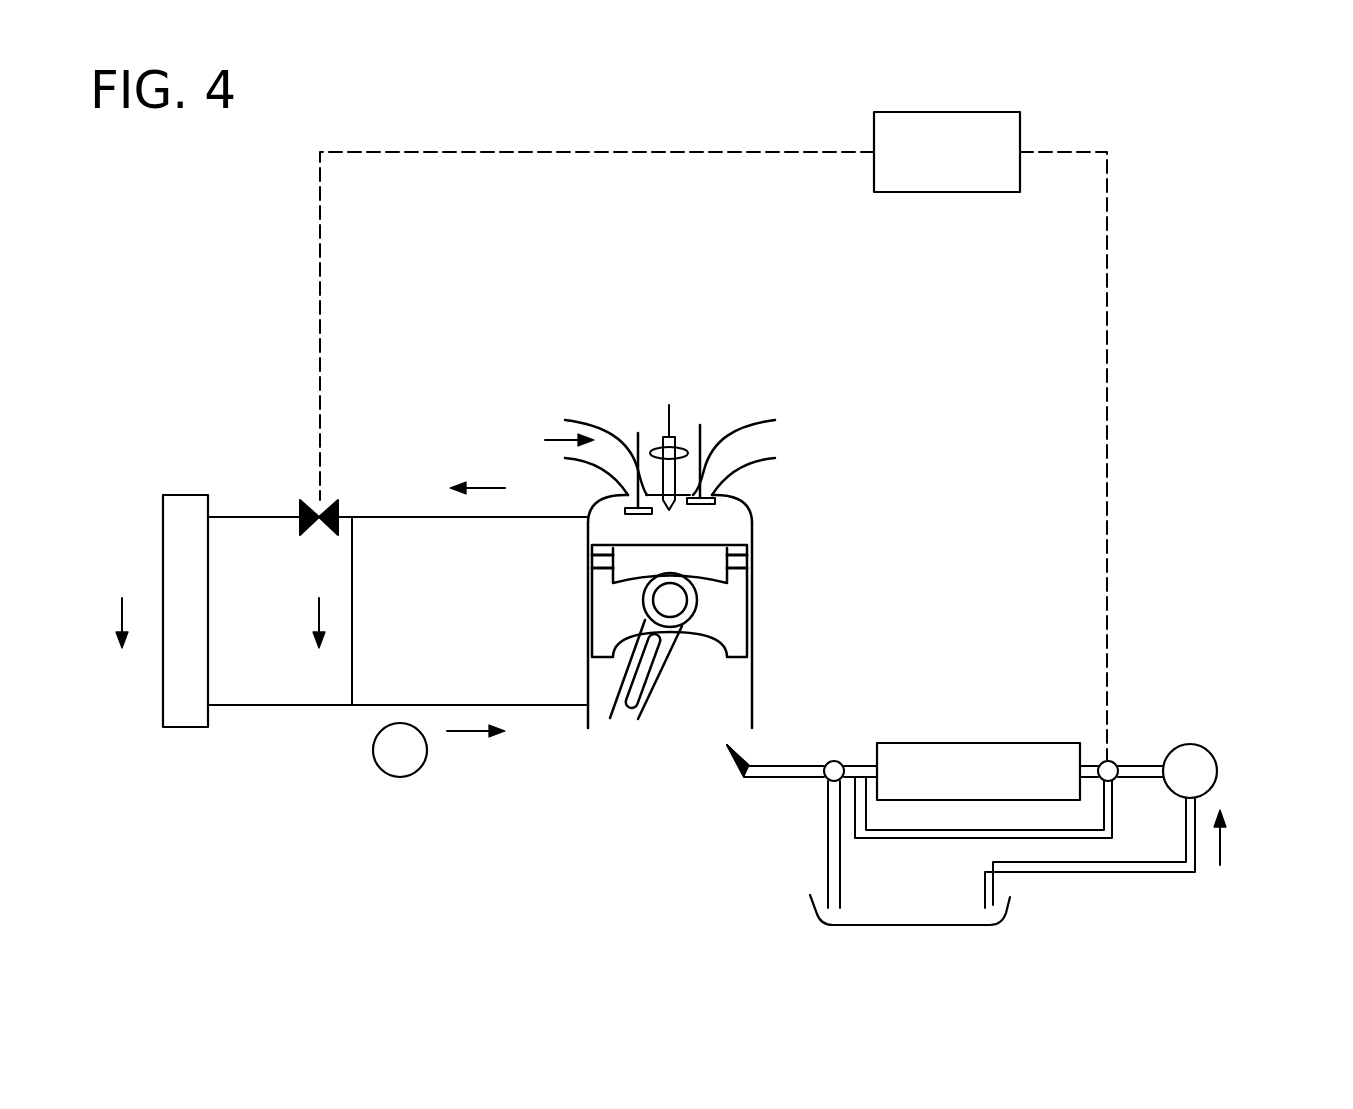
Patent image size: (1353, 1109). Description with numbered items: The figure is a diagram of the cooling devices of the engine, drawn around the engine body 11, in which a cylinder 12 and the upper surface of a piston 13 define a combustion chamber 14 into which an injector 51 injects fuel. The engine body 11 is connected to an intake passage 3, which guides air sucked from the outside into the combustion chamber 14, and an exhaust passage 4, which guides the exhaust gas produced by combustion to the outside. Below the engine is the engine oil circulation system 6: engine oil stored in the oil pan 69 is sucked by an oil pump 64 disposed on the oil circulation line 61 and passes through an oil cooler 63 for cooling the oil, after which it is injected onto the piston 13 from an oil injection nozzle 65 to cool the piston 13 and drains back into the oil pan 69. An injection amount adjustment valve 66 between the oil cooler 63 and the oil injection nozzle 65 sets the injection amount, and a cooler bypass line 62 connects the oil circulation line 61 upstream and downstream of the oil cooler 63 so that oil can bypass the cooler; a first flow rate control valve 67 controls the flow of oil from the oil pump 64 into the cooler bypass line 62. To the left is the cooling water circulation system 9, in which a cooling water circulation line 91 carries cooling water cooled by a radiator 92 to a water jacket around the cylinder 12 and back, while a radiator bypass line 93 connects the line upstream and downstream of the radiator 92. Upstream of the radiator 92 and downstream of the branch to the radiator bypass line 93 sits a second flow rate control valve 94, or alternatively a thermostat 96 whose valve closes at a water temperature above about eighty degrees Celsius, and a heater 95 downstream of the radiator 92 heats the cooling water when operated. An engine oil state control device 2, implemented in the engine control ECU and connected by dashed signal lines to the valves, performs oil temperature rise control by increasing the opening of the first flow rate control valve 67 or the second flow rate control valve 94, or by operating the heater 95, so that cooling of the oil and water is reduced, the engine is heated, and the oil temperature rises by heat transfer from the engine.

The engine oil state control device 2 is at (1020, 133).
The intake passage 3 is at (585, 418).
The exhaust passage 4 is at (745, 418).
The engine oil circulation system 6 is at (1266, 633).
The cooling water circulation system 9 is at (208, 414).
The engine body 11 is at (776, 476).
The cylinder 12 is at (648, 451).
The piston 13 is at (735, 621).
The combustion chamber 14 is at (612, 528).
The injector 51 is at (672, 438).
The oil circulation line 61 is at (1075, 873).
The cooler bypass line 62 is at (1027, 839).
The oil cooler 63 is at (1010, 743).
The oil pump 64 is at (1217, 768).
The oil injection nozzle 65 is at (740, 762).
The injection amount adjustment valve 66 is at (828, 782).
The first flow rate control valve 67 is at (1113, 760).
The oil pan 69 is at (910, 926).
The cooling water circulation line 91 is at (260, 707).
The radiator 92 is at (163, 533).
The radiator bypass line 93 is at (353, 614).
The second flow rate control valve 94 is at (263, 493).
The heater 95 is at (400, 778).
The thermostat 96 is at (300, 503).